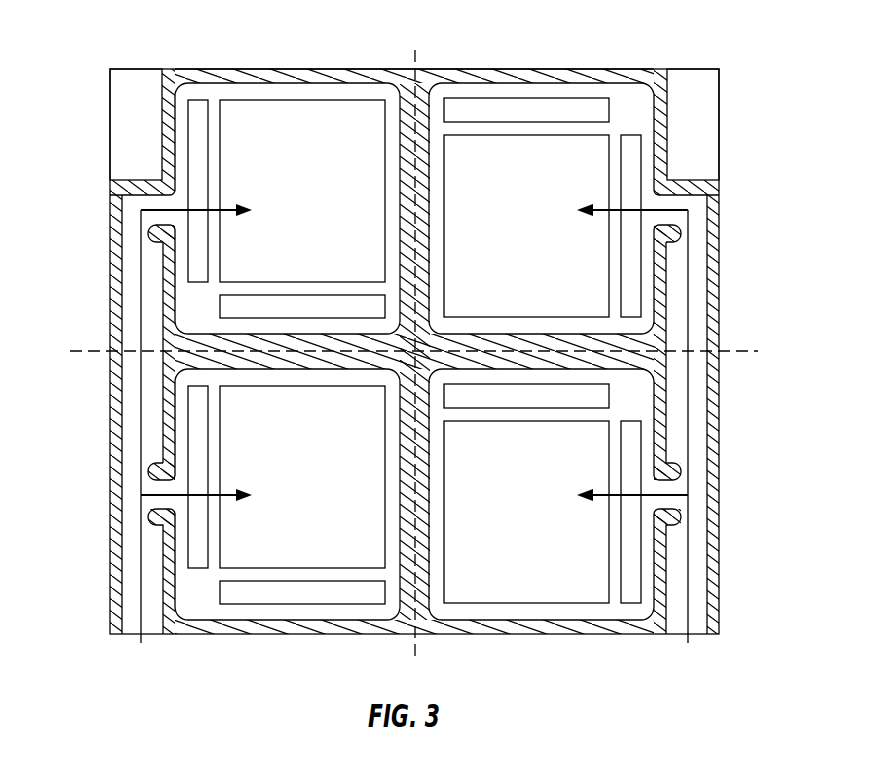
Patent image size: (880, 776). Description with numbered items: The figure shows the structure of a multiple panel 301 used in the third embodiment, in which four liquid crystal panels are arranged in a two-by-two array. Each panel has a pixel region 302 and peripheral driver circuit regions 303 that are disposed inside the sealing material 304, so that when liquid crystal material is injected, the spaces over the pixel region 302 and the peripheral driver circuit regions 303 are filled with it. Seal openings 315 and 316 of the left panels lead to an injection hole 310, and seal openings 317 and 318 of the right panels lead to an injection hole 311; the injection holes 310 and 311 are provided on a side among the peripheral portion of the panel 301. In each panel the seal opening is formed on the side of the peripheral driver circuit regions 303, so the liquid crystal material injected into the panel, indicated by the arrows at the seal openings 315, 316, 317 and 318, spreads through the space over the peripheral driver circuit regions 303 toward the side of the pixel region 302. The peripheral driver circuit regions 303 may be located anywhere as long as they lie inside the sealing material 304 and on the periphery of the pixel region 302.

The multiple panel 301 is at (673, 69).
The pixel region 302 is at (292, 112).
The peripheral driver circuit regions 303 is at (198, 255).
The sealing material 304 is at (197, 69).
The injection hole 310 is at (150, 627).
The injection hole 311 is at (694, 627).
The seal opening 315 is at (148, 202).
The seal opening 316 is at (676, 199).
The seal opening 317 is at (146, 499).
The seal opening 318 is at (680, 494).